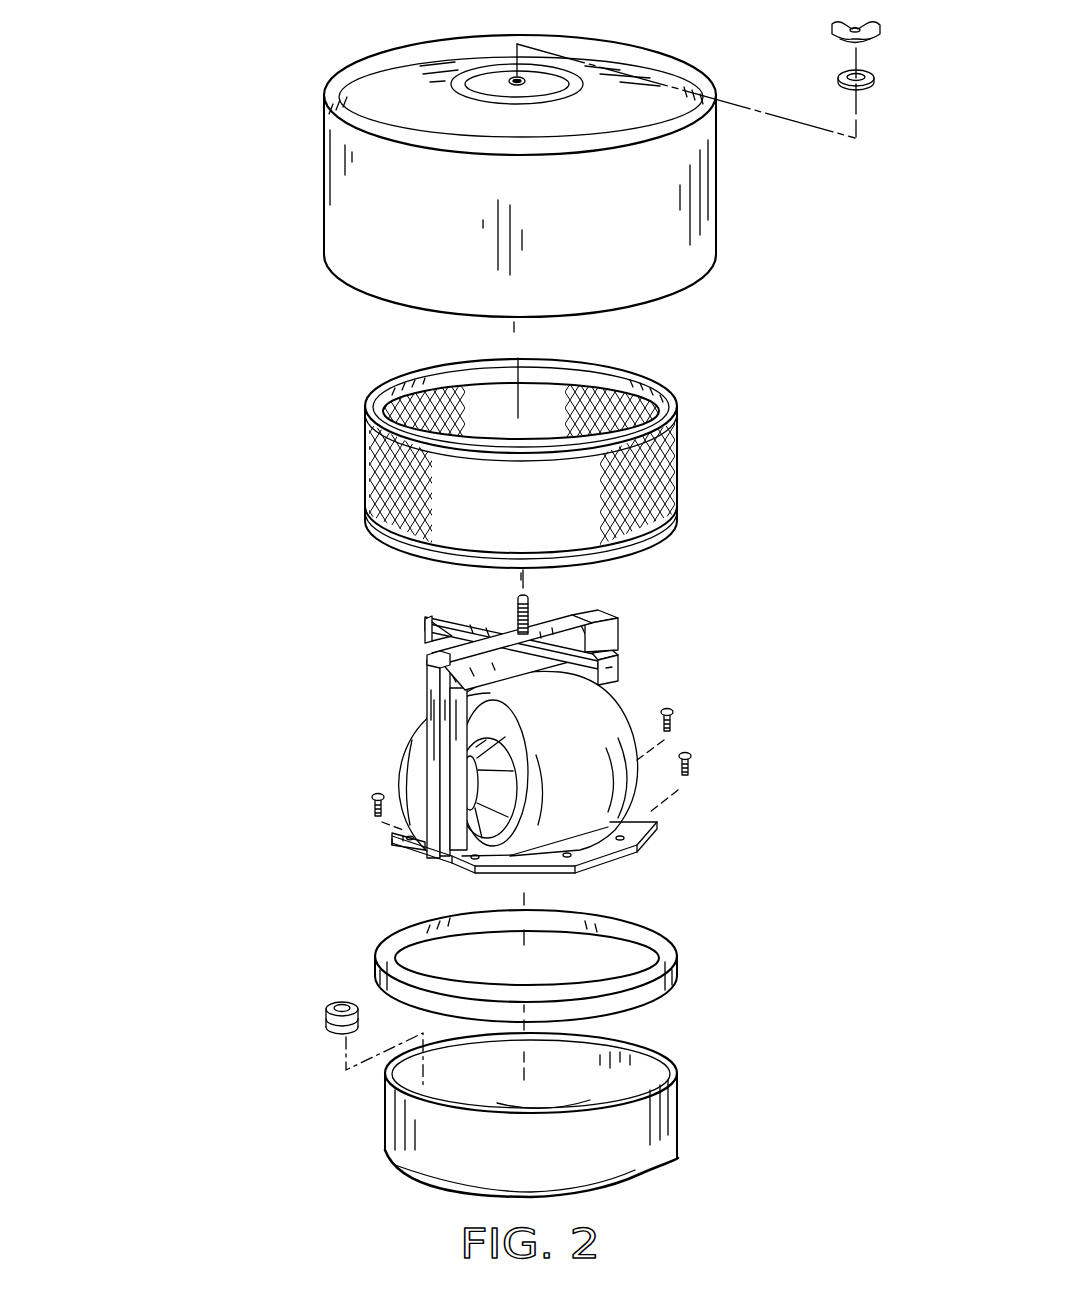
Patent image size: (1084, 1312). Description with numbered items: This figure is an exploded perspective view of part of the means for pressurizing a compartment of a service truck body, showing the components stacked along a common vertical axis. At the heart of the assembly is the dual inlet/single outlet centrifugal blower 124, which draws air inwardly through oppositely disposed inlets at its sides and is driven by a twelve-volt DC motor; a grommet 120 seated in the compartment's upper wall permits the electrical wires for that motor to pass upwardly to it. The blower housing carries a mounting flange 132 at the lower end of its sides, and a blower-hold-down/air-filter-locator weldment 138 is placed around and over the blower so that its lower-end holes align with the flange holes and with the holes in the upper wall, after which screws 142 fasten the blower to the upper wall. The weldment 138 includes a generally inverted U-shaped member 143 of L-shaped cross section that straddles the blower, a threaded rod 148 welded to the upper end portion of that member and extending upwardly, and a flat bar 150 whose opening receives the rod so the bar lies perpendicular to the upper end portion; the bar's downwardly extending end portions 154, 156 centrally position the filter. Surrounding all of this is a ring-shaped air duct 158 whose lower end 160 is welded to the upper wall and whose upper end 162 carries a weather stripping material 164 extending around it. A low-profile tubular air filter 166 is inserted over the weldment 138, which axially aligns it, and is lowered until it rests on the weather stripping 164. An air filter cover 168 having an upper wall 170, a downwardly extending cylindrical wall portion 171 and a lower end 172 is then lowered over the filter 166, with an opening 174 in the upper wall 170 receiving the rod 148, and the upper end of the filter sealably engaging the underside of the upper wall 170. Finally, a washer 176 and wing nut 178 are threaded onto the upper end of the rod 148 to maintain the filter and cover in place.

The grommet 120 is at (328, 1002).
The dual inlet/single outlet centrifugal blower 124 is at (380, 731).
The mounting flange 132 is at (405, 842).
The blower-hold-down/air-filter-locator weldment 138 is at (534, 857).
The screws 142 is at (675, 713).
The inverted U-shaped member 143 is at (530, 712).
The threaded rod 148 is at (530, 600).
The flat bar 150 is at (457, 612).
The end portion 154 is at (427, 637).
The end portion 156 is at (620, 668).
The ring-shaped air duct 158 is at (596, 1118).
The lower end 160 is at (670, 1160).
The upper end 162 is at (678, 1056).
The weather stripping material 164 is at (678, 963).
The low-profile tubular air filter 166 is at (710, 444).
The air filter cover 168 is at (730, 208).
The upper wall 170 is at (367, 89).
The cylindrical wall portion 171 is at (600, 244).
The lower end 172 is at (672, 296).
The opening 174 is at (512, 80).
The washer 176 is at (838, 73).
The wing nut 178 is at (830, 27).